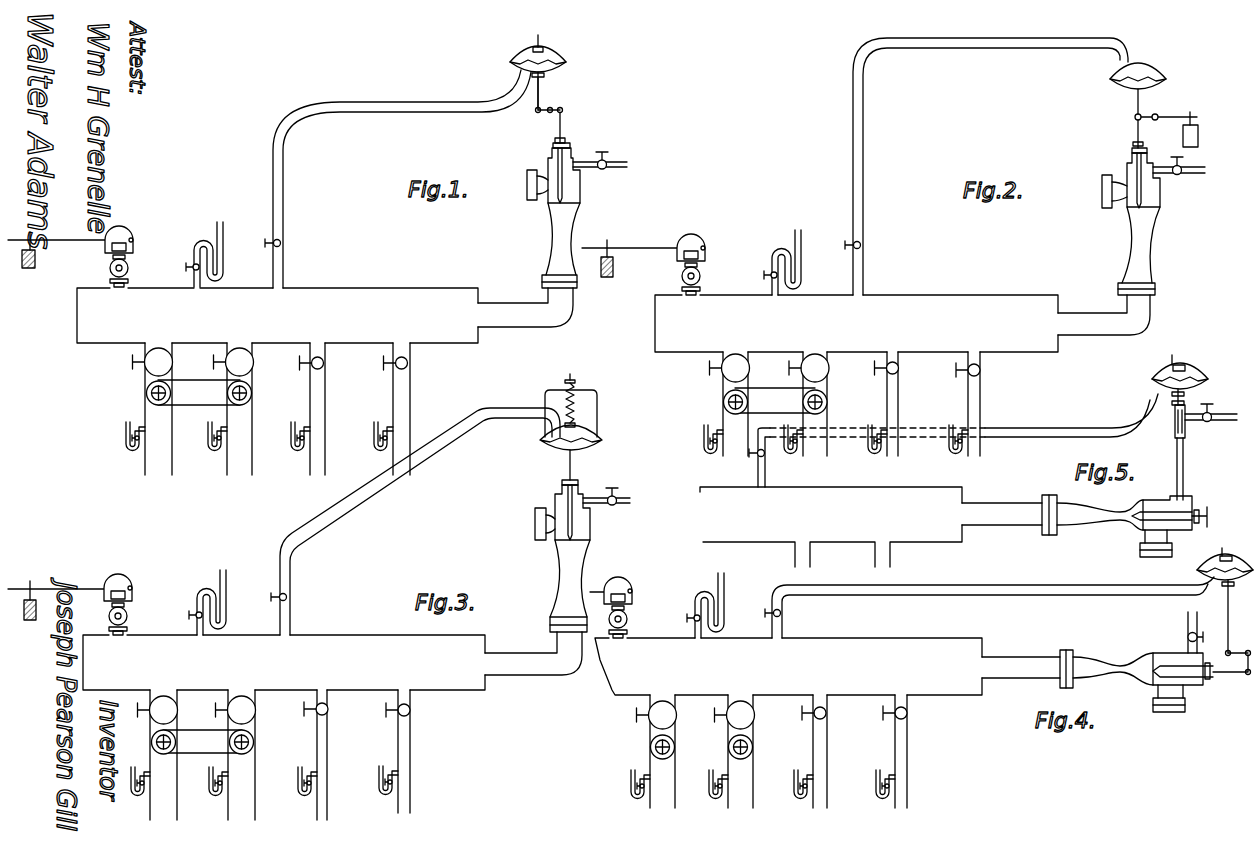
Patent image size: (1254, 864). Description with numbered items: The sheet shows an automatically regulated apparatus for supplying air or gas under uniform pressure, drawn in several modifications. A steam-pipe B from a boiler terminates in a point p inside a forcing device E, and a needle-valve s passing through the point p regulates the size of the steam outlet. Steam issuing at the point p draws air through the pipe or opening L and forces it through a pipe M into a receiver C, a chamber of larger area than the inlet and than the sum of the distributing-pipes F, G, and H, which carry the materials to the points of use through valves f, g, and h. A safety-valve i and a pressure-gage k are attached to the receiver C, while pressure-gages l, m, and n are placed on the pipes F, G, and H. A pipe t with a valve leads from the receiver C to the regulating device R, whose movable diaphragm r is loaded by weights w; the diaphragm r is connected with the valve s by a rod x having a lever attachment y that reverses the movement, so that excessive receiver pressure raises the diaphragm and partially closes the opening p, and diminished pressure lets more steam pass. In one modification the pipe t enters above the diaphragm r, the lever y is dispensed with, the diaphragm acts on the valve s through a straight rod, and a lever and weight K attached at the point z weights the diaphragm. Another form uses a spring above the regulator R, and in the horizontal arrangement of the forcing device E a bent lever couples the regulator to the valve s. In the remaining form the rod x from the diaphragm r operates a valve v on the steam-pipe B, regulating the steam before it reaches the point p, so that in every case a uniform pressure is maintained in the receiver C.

In FIG. 1, the receiver C is at (277, 315).
In FIG. 2, the receiver C is at (856, 323).
In FIG. 3, the receiver C is at (284, 662).
In FIG. 4, the receiver C is at (788, 666).
In FIG. 1, the pipe with valve t is at (398, 179).
In FIG. 2, the pipe with valve t is at (986, 158).
In FIG. 3, the pipe with valve t is at (415, 515).
In FIG. 4, the pipe with valve t is at (989, 607).
In FIG. 5, the pipe with valve t is at (953, 440).
In FIG. 1, the safety-valve i is at (74, 256).
In FIG. 2, the safety-valve i is at (649, 263).
In FIG. 3, the safety-valve i is at (76, 604).
In FIG. 4, the safety-valve i is at (616, 607).
In FIG. 1, the pressure-gage k is at (210, 254).
In FIG. 2, the pressure-gage k is at (789, 262).
In FIG. 3, the pressure-gage k is at (214, 602).
In FIG. 4, the pressure-gage k is at (712, 605).
In FIG. 1, the valve h is at (322, 359).
In FIG. 2, the valve h is at (896, 366).
In FIG. 3, the valve h is at (326, 707).
In FIG. 4, the valve h is at (822, 712).
In FIG. 1, the valve f is at (194, 392).
In FIG. 2, the valve f is at (770, 401).
In FIG. 3, the valve f is at (197, 742).
In FIG. 4, the valve f is at (669, 747).
In FIG. 1, the valve g is at (247, 393).
In FIG. 2, the valve g is at (824, 402).
In FIG. 3, the valve g is at (251, 742).
In FIG. 4, the valve g is at (749, 747).
In FIG. 1, the distributing-pipe F is at (153, 409).
In FIG. 2, the distributing-pipe F is at (730, 404).
In FIG. 3, the distributing-pipe F is at (158, 755).
In FIG. 4, the distributing-pipe F is at (657, 751).
In FIG. 1, the distributing-pipe G is at (234, 409).
In FIG. 2, the distributing-pipe G is at (809, 404).
In FIG. 3, the distributing-pipe G is at (236, 755).
In FIG. 4, the distributing-pipe G is at (735, 751).
In FIG. 1, the distributing-pipe H is at (325, 409).
In FIG. 2, the distributing-pipe H is at (901, 404).
In FIG. 3, the distributing-pipe H is at (328, 755).
In FIG. 4, the distributing-pipe H is at (829, 751).
In FIG. 1, the pressure-gage l is at (124, 435).
In FIG. 2, the pressure-gage l is at (701, 436).
In FIG. 3, the pressure-gage l is at (128, 781).
In FIG. 4, the pressure-gage l is at (631, 784).
In FIG. 1, the pressure-gage m is at (206, 433).
In FIG. 2, the pressure-gage m is at (793, 434).
In FIG. 3, the pressure-gage m is at (207, 778).
In FIG. 4, the pressure-gage m is at (706, 780).
In FIG. 1, the pressure-gage n is at (291, 433).
In FIG. 2, the pressure-gage n is at (869, 434).
In FIG. 3, the pressure-gage n is at (294, 778).
In FIG. 4, the pressure-gage n is at (791, 780).
In FIG. 1, the regulating device R is at (548, 78).
In FIG. 2, the regulating device R is at (1148, 76).
In FIG. 4, the regulating device R is at (1215, 568).
In FIG. 5, the regulating device R is at (1188, 376).
In FIG. 1, the weights w is at (531, 40).
In FIG. 4, the weights w is at (1221, 552).
In FIG. 5, the weights w is at (1173, 360).
In FIG. 1, the movable diaphragm r is at (538, 65).
In FIG. 2, the movable diaphragm r is at (1138, 72).
In FIG. 4, the movable diaphragm r is at (1225, 570).
In FIG. 5, the movable diaphragm r is at (1180, 380).
In FIG. 1, the rod x is at (556, 113).
In FIG. 2, the rod x is at (1136, 121).
In FIG. 4, the rod x is at (1232, 634).
In FIG. 1, the lever attachment y is at (549, 119).
In FIG. 4, the lever attachment y is at (1238, 647).
In FIG. 2, the point of attachment z is at (1160, 114).
In FIG. 2, the lever and weight K is at (1175, 129).
In FIG. 1, the steam-pipe B is at (606, 161).
In FIG. 2, the steam-pipe B is at (1186, 162).
In FIG. 4, the steam-pipe B is at (1196, 624).
In FIG. 5, the steam-pipe B is at (1217, 414).
In FIG. 1, the pipe or opening L is at (527, 185).
In FIG. 2, the pipe or opening L is at (1102, 191).
In FIG. 4, the pipe or opening L is at (1169, 709).
In FIG. 5, the pipe or opening L is at (1156, 554).
In FIG. 1, the point p is at (565, 177).
In FIG. 2, the point p is at (1144, 182).
In FIG. 4, the point p is at (1183, 676).
In FIG. 5, the point p is at (1169, 520).
In FIG. 1, the needle-valve s is at (564, 184).
In FIG. 2, the needle-valve s is at (1143, 188).
In FIG. 4, the needle-valve s is at (1168, 669).
In FIG. 5, the needle-valve s is at (1154, 513).
In FIG. 5, the valve v is at (1185, 444).
In FIG. 1, the forcing device E is at (557, 245).
In FIG. 2, the forcing device E is at (1139, 251).
In FIG. 4, the forcing device E is at (1113, 665).
In FIG. 5, the forcing device E is at (1100, 519).
In FIG. 1, the pipe M is at (525, 307).
In FIG. 2, the pipe M is at (1104, 315).
In FIG. 3, the pipe M is at (533, 653).
In FIG. 4, the pipe M is at (1027, 669).
In FIG. 5, the pipe M is at (1009, 515).